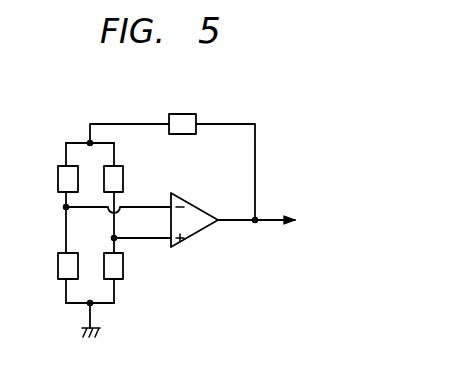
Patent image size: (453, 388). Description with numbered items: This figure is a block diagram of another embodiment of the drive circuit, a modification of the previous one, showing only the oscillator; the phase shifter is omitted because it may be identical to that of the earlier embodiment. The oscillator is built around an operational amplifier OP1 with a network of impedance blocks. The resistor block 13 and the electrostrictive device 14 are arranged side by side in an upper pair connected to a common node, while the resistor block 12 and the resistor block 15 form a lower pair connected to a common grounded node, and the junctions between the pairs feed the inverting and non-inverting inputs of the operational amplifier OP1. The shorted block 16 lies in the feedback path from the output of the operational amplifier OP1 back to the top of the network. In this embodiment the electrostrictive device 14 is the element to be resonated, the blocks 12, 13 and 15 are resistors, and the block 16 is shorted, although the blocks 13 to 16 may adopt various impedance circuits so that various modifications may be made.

The resistor block 12 is at (58, 270).
The resistor block 13 is at (58, 180).
The electrostrictive device 14 is at (123, 178).
The resistor block 15 is at (123, 270).
The shorted block 16 is at (182, 112).
The operational amplifier OP1 is at (205, 228).